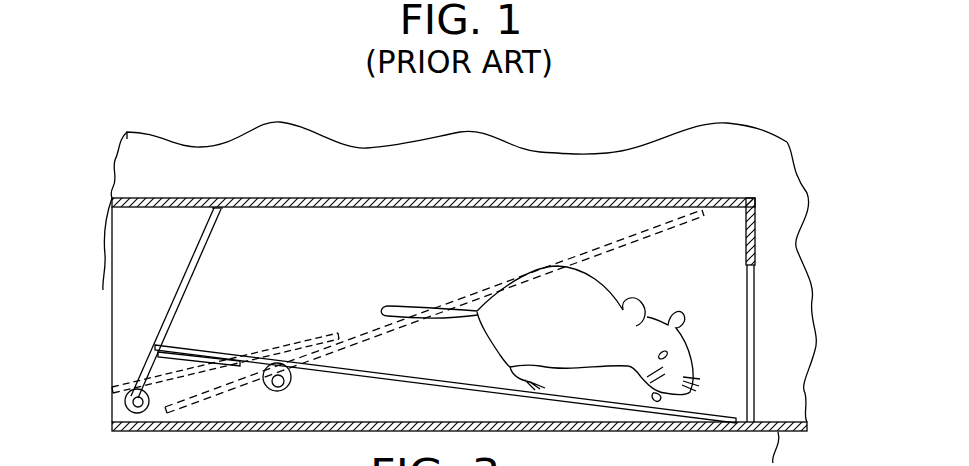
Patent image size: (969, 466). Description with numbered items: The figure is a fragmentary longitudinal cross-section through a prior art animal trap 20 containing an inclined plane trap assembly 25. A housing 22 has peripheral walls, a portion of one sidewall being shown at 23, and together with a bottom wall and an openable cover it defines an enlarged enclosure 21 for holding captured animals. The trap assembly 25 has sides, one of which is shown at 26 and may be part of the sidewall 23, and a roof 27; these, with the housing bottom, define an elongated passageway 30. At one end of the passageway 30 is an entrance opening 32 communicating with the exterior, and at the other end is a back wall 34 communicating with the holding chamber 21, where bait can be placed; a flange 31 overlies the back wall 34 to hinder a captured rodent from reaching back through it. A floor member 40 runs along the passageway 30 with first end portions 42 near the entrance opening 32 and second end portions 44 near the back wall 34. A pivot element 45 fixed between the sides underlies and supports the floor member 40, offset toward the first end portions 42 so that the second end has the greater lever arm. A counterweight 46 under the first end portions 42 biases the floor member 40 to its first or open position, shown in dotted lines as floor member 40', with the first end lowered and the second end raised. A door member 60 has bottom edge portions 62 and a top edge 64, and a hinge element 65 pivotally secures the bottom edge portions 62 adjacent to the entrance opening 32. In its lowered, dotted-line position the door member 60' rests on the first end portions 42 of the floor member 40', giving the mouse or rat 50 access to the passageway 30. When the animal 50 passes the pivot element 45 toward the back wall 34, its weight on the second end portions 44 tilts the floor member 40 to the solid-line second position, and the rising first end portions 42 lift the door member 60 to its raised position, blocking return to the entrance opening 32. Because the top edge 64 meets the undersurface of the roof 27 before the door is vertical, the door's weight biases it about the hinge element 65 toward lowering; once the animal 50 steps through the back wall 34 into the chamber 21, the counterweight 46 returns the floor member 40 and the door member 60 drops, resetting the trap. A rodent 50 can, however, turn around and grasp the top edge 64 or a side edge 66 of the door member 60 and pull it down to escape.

The animal trap 20 is at (243, 113).
The enclosure 21 is at (773, 225).
The housing 22 is at (673, 162).
The sidewall 23 is at (757, 145).
The inclined plane trap assembly 25 is at (458, 150).
The side 26 is at (297, 222).
The roof 27 is at (553, 203).
The passageway 30 is at (330, 274).
The flange 31 is at (755, 252).
The entrance opening 32 is at (138, 291).
The back wall 34 is at (755, 300).
The floor member 40 is at (445, 405).
The floor member in first position 40' is at (434, 311).
The first end portions 42 is at (210, 400).
The second end portions 44 is at (728, 413).
The pivot element 45 is at (273, 395).
The counterweight 46 is at (210, 400).
The mouse or rat 50 is at (577, 310).
The door member 60 is at (147, 232).
The door member in lowered position 60' is at (255, 321).
The bottom edge portions 62 is at (118, 407).
The top edge 64 is at (215, 203).
The hinge element 65 is at (137, 413).
The side edges 66 is at (192, 262).